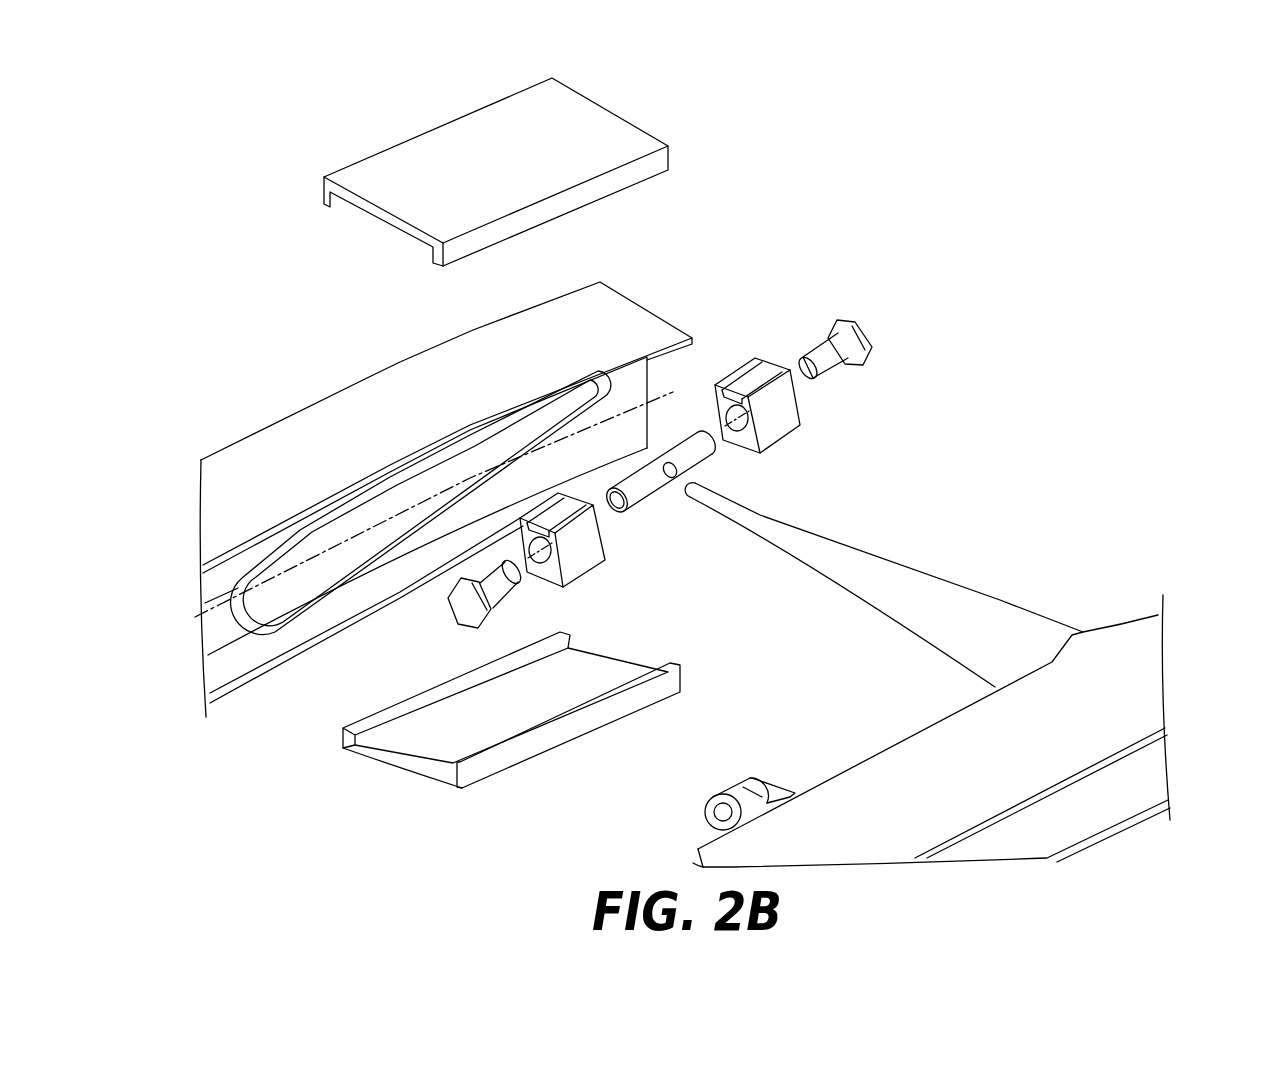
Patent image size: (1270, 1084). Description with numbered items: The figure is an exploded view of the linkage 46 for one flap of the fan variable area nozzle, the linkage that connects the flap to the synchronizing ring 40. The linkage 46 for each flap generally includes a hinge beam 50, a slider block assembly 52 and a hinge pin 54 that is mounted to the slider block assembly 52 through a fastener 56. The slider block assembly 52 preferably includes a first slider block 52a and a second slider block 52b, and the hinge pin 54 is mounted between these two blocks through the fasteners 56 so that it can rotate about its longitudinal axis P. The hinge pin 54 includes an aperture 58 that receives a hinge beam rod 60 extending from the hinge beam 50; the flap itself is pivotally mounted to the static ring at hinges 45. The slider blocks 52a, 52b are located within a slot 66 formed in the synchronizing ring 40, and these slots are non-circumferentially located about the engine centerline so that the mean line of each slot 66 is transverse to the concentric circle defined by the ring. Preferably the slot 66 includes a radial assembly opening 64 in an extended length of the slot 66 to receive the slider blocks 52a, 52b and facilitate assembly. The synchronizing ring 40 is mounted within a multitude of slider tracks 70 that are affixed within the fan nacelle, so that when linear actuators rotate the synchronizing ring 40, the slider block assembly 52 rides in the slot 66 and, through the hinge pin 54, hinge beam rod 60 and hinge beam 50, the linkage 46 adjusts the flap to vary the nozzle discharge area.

The synchronizing ring 40 is at (443, 488).
The hinge 45 is at (760, 780).
The linkage 46 is at (959, 675).
The hinge beam 50 is at (1138, 685).
The slider block assembly 52 is at (675, 444).
The first slider block 52a is at (588, 557).
The second slider block 52b is at (782, 430).
The hinge pin 54 is at (691, 438).
The fastener 56 is at (462, 612).
The aperture 58 is at (673, 467).
The hinge beam rod 60 is at (762, 517).
The radial assembly opening 64 is at (267, 650).
The slot 66 is at (383, 483).
The slider track 70 is at (620, 127).
The longitudinal axis P is at (797, 380).